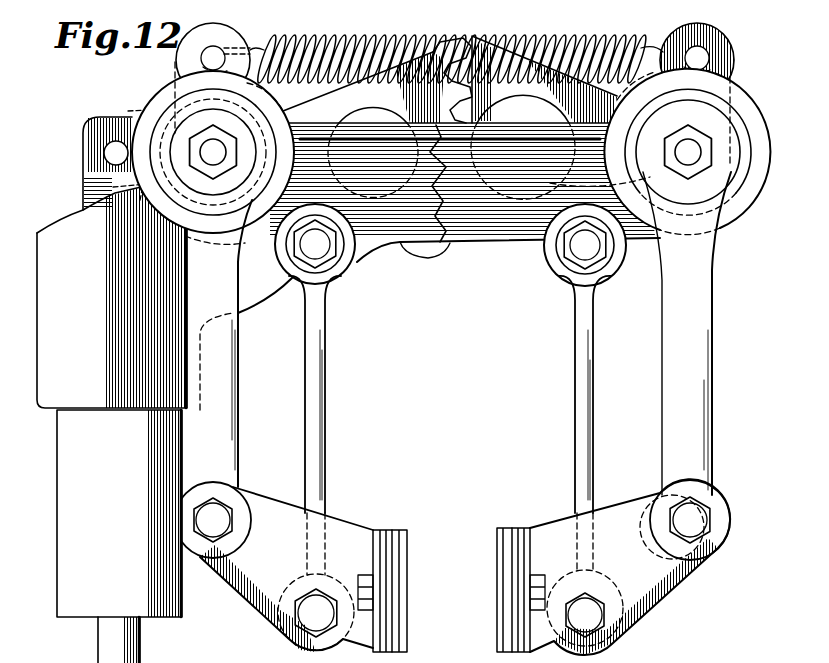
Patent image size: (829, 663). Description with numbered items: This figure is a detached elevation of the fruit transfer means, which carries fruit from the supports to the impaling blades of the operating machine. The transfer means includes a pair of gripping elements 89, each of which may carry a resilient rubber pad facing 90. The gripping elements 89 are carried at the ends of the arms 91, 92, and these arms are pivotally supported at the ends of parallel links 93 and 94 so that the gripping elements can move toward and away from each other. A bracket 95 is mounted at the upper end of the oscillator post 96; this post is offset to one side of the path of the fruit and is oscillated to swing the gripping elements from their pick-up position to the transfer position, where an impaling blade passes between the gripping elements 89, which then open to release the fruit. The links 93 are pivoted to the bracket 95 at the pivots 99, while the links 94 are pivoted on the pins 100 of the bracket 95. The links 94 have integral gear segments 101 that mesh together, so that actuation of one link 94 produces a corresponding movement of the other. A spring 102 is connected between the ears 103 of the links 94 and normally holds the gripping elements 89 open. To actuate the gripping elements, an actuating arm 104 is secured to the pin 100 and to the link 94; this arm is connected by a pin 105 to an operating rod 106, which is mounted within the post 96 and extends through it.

The gripping elements 89 is at (398, 536).
The resilient rubber pad facing 90 is at (398, 603).
The arm 91 is at (549, 521).
The arm 92 is at (268, 510).
The links 93 is at (327, 417).
The links 94 is at (227, 365).
The bracket 95 is at (43, 297).
The oscillator post 96 is at (77, 538).
The pivot 99 is at (328, 252).
The pins 100 is at (203, 146).
The gear segments 101 is at (431, 52).
The spring 102 is at (577, 44).
The ears 103 is at (231, 29).
The actuating arm 104 is at (97, 133).
The pin 105 is at (110, 155).
The operating rod 106 is at (143, 632).